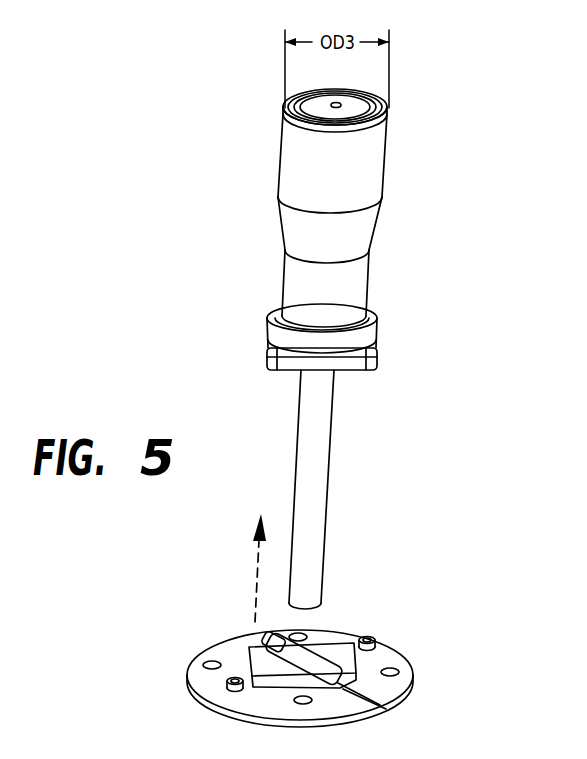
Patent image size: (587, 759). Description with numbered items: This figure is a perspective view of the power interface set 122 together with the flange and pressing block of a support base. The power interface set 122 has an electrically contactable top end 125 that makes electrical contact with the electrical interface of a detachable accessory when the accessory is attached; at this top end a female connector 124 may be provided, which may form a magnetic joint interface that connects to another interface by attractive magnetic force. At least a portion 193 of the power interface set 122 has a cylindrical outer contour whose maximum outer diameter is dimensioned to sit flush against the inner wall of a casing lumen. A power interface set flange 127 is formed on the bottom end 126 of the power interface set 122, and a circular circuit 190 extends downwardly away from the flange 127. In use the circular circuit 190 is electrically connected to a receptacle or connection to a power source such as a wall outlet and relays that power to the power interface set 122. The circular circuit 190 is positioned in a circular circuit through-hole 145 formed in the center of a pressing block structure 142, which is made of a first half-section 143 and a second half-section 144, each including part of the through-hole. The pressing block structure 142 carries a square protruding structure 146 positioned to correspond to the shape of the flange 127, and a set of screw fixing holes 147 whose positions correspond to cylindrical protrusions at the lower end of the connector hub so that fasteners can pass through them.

The power interface set 122 is at (272, 216).
The female connector 124 is at (337, 100).
The electrically contactable top end 125 is at (313, 103).
The portion of the power interface set 193 is at (384, 177).
The bottom end 126 is at (353, 322).
The power interface set flange 127 is at (377, 360).
The circular circuit 190 is at (299, 425).
The pressing block structure 142 is at (427, 671).
The first half-section 143 is at (385, 655).
The second half-section 144 is at (228, 670).
The circular circuit through-hole 145 is at (315, 645).
The square protruding structure 146 is at (260, 662).
The screw fixing holes 147 is at (390, 668).